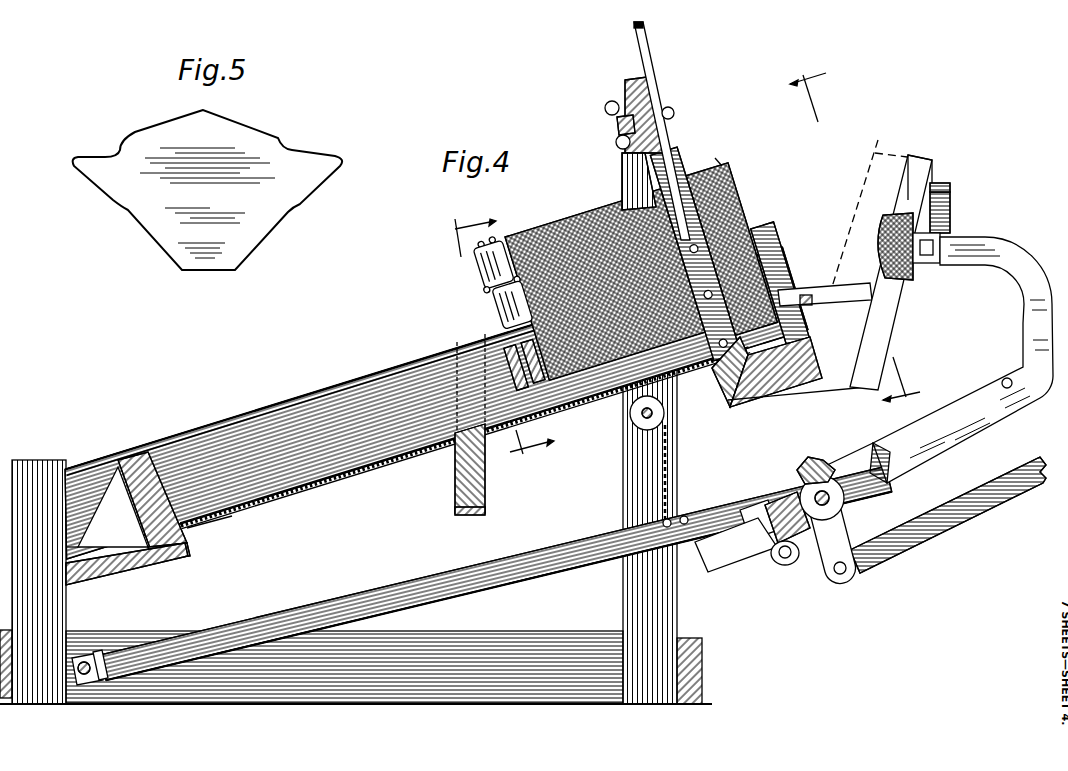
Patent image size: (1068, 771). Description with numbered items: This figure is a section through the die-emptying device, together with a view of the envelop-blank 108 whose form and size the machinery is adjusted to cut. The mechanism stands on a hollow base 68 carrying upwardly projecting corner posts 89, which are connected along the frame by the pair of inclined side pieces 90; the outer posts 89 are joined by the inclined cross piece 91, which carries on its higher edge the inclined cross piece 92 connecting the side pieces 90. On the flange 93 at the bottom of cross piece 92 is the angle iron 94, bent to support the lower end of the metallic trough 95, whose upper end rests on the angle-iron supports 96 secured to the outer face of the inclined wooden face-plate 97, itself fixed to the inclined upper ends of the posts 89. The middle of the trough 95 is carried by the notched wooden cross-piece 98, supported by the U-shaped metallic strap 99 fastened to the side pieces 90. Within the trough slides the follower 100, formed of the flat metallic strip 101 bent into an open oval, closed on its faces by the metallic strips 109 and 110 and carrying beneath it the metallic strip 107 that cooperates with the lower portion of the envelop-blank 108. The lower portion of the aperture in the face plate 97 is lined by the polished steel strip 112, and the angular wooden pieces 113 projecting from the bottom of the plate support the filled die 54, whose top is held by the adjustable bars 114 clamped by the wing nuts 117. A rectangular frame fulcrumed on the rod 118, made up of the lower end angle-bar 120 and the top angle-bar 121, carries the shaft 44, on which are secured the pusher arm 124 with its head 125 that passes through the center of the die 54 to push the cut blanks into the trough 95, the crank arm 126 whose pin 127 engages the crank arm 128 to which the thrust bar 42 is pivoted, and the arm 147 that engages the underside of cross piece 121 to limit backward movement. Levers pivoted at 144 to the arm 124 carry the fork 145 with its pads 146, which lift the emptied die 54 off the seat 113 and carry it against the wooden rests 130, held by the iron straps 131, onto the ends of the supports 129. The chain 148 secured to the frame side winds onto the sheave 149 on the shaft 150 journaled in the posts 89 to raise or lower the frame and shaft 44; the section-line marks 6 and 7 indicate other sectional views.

In FIG. 4, the section line 6- 6 is at (855, 239).
In FIG. 4, the section line 7- 7 is at (504, 337).
In FIG. 4, the link or thrust bar 42 is at (975, 490).
In FIG. 4, the shaft 44 is at (838, 498).
In FIG. 4, the die 54 is at (804, 202).
In FIG. 4, the base 68 is at (356, 667).
In FIG. 4, the corner posts 89 is at (344, 536).
In FIG. 4, the inclined side pieces 90 is at (353, 384).
In FIG. 4, the inclined cross piece 91 is at (110, 567).
In FIG. 4, the inclined cross piece 92 is at (128, 458).
In FIG. 4, the flange 93 is at (186, 547).
In FIG. 4, the angle iron 94 is at (195, 528).
In FIG. 4, the trough 95 is at (322, 478).
In FIG. 4, the angle-iron supports 96 is at (708, 368).
In FIG. 4, the face-plate 97 is at (628, 80).
In FIG. 4, the cross-piece 98 is at (456, 489).
In FIG. 4, the strap 99 is at (473, 514).
In FIG. 4, the follower 100 is at (481, 284).
In FIG. 4, the flat metallic strip 101 is at (470, 262).
In FIG. 4, the metallic strip 107 is at (505, 359).
In FIG. 5, the envelop-blank 108 is at (262, 128).
In FIG. 4, the envelop-blank 108 is at (555, 216).
In FIG. 4, the metallic strip 109 is at (492, 298).
In FIG. 4, the metallic strip 110 is at (492, 317).
In FIG. 4, the polished steel strip 112 is at (694, 351).
In FIG. 4, the angular wooden pieces 113 is at (805, 374).
In FIG. 4, the adjustable bars 114 is at (645, 25).
In FIG. 4, the wing nuts 117 is at (606, 109).
In FIG. 4, the rod 118 is at (98, 680).
In FIG. 4, the lower end angle-bar 120 is at (166, 669).
In FIG. 4, the top angle-bar 121 is at (687, 517).
In FIG. 4, the pusher arm or lever 124 is at (997, 403).
In FIG. 4, the head 125 is at (887, 245).
In FIG. 4, the crank arm 126 is at (804, 557).
In FIG. 4, the pin 127 is at (782, 563).
In FIG. 4, the crank arm 128 is at (848, 504).
In FIG. 4, the supports 129 is at (812, 296).
In FIG. 4, the wooden rests 130 is at (917, 163).
In FIG. 4, the iron straps 131 is at (904, 300).
In FIG. 4, the pivot 144 is at (1005, 378).
In FIG. 4, the fork 145 is at (950, 201).
In FIG. 4, the pads 146 is at (946, 185).
In FIG. 4, the arm 147 is at (726, 562).
In FIG. 4, the chain 148 is at (672, 452).
In FIG. 4, the sheave 149 is at (640, 414).
In FIG. 4, the shaft 150 is at (637, 434).